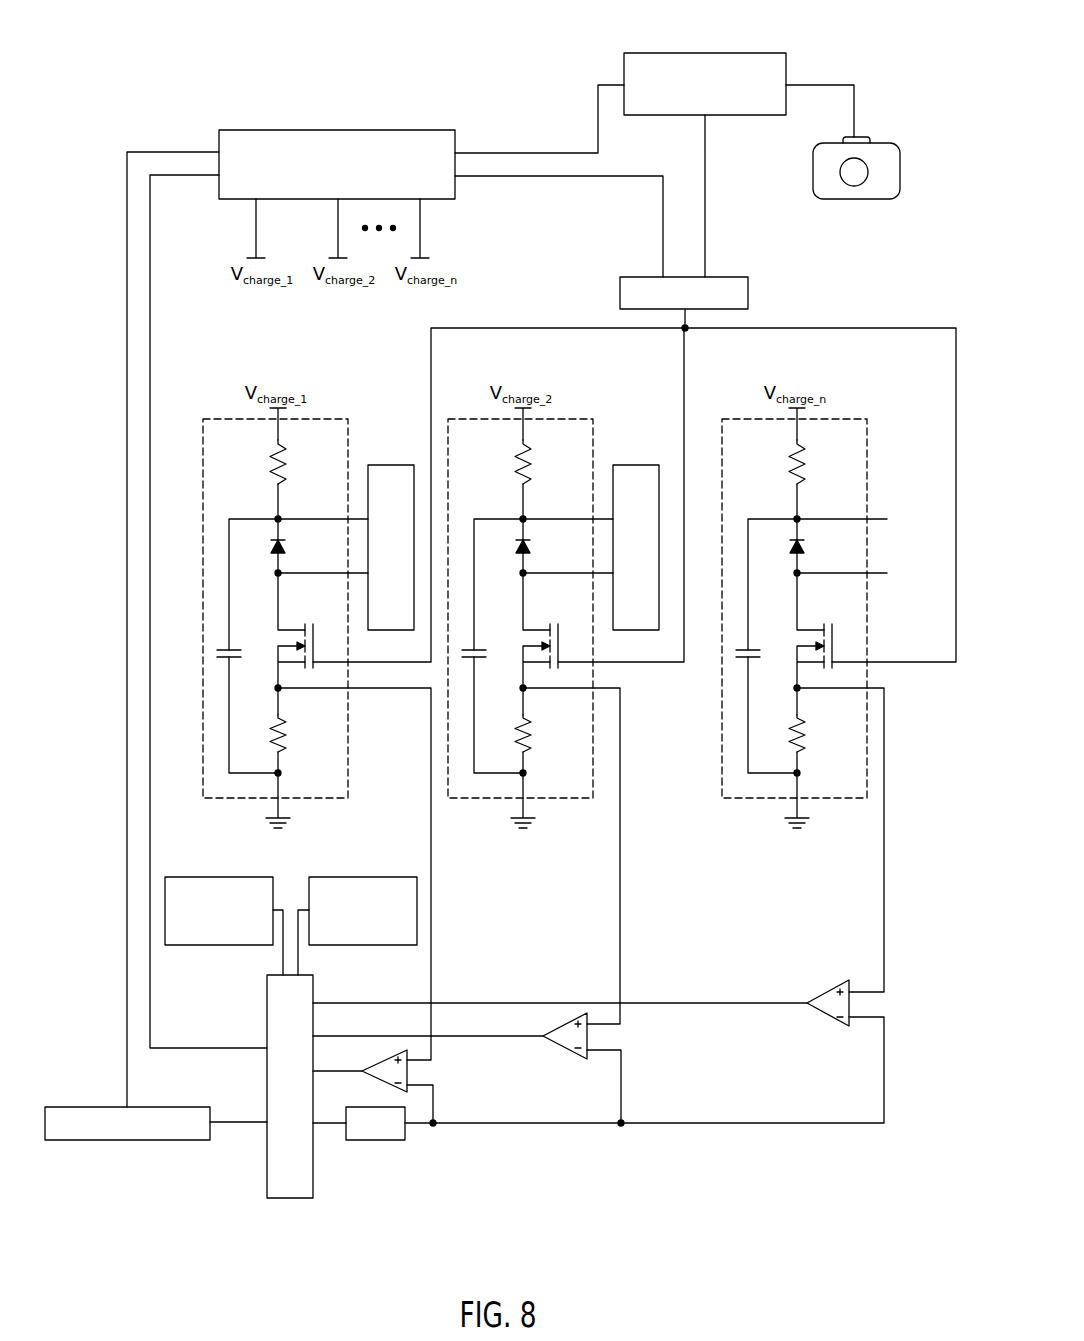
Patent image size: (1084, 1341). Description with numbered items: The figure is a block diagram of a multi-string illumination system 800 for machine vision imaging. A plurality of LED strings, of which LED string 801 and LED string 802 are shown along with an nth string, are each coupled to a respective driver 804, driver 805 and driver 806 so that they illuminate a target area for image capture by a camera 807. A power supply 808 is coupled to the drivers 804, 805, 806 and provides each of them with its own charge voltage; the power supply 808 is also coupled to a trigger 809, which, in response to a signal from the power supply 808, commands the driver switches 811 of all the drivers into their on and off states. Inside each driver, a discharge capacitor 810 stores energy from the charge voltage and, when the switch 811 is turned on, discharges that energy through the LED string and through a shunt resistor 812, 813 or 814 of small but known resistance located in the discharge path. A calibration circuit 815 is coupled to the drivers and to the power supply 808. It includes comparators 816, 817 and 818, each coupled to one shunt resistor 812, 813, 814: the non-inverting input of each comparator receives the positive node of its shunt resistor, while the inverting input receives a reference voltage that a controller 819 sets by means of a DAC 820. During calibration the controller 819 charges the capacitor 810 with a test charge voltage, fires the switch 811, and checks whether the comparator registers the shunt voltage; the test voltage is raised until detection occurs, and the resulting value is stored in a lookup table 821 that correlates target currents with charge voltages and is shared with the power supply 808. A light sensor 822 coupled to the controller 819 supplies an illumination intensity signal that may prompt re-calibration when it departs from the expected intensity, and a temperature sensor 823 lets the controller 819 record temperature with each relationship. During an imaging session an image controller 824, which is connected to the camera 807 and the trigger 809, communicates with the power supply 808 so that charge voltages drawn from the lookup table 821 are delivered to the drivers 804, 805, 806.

The multi-string illumination system 800 is at (192, 43).
The LED string 801 is at (392, 465).
The LED string 802 is at (449, 812).
The driver 804 is at (213, 419).
The driver 805 is at (458, 419).
The driver 806 is at (732, 419).
The camera 807 is at (888, 143).
The power supply 808 is at (412, 130).
The trigger 809 is at (748, 292).
The discharge capacitor 810 is at (236, 650).
The driver switch 811 is at (291, 628).
The shunt resistor 812 is at (284, 725).
The shunt resistor 813 is at (529, 725).
The shunt resistor 814 is at (803, 725).
The calibration circuit 815 is at (184, 1171).
The comparator 816 is at (410, 1069).
The comparator 817 is at (554, 1047).
The comparator 818 is at (813, 1015).
The controller 819 is at (267, 1003).
The digital-to-analog controller (DAC) 820 is at (378, 1141).
The lookup table 821 is at (65, 1107).
The light sensor 822 is at (348, 877).
The temperature sensor 823 is at (200, 877).
The image controller 824 is at (645, 53).